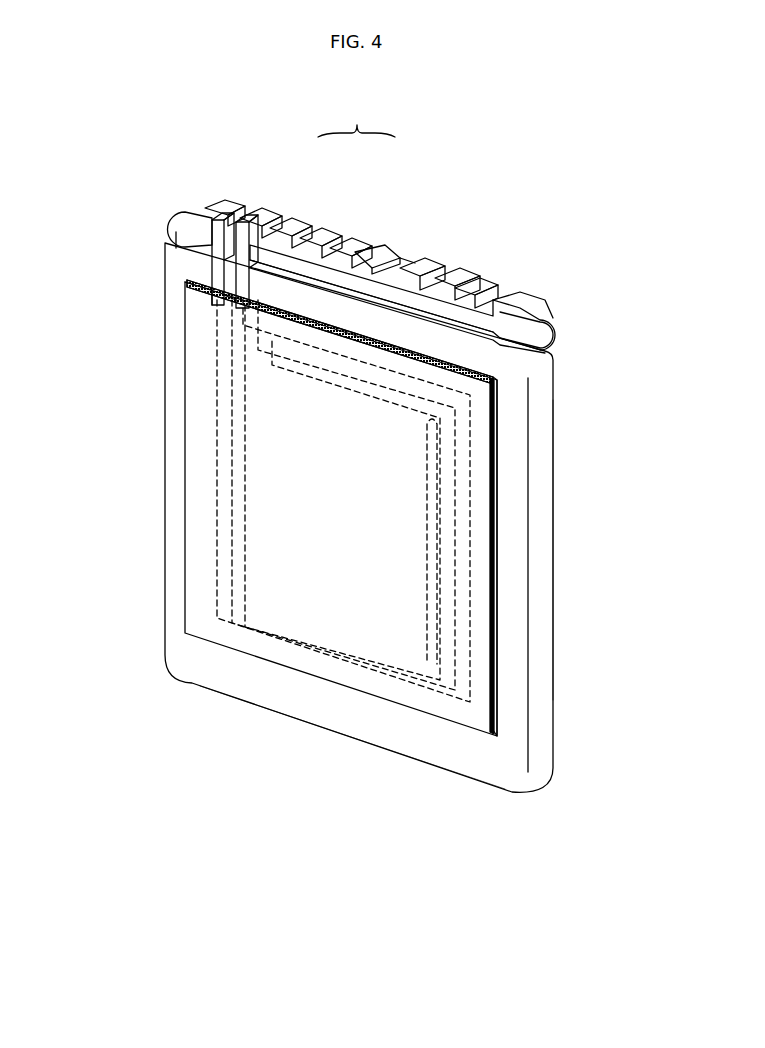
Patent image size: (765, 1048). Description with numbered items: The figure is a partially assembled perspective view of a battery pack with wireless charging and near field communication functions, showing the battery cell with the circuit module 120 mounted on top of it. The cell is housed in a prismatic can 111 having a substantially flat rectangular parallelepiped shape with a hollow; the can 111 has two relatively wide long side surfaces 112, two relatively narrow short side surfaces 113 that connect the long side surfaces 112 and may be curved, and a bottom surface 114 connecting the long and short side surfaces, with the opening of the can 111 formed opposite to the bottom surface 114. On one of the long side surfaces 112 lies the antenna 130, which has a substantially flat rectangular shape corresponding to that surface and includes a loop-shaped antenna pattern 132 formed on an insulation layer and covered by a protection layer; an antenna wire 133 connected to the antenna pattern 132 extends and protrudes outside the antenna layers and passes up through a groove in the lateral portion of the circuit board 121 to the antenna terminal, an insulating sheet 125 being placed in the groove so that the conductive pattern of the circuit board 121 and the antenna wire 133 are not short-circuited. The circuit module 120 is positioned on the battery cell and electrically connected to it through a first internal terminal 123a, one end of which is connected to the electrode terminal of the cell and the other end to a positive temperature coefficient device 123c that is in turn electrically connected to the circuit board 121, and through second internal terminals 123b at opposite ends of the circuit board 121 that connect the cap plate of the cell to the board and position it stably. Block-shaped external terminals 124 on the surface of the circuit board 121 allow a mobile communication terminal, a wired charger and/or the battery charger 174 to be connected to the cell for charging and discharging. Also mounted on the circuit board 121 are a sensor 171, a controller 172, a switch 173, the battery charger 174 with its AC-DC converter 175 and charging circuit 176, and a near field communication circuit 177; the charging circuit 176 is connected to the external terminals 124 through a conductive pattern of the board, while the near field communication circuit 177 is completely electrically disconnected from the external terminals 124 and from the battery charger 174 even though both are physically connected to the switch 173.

The can 111 is at (543, 800).
The long side surfaces 112 is at (512, 494).
The short side surfaces 113 is at (541, 596).
The bottom surface 114 is at (340, 745).
The circuit module 120 is at (524, 291).
The circuit board 121 is at (195, 226).
The first internal terminal 123a is at (383, 253).
The second internal terminals 123b is at (185, 222).
The positive temperature coefficient (PTC) device 123c is at (405, 262).
The external terminals 124 is at (478, 280).
The insulating sheet 125 is at (234, 306).
The antenna 130 is at (505, 378).
The antenna pattern 132 is at (215, 468).
The antenna wire 133 is at (240, 262).
The sensor 171 is at (244, 208).
The controller 172 is at (285, 224).
The switch 173 is at (307, 236).
The battery charger 174 is at (356, 116).
The AC-DC converter 175 is at (318, 245).
The charging circuit 176 is at (340, 255).
The near field communication circuit 177 is at (422, 270).